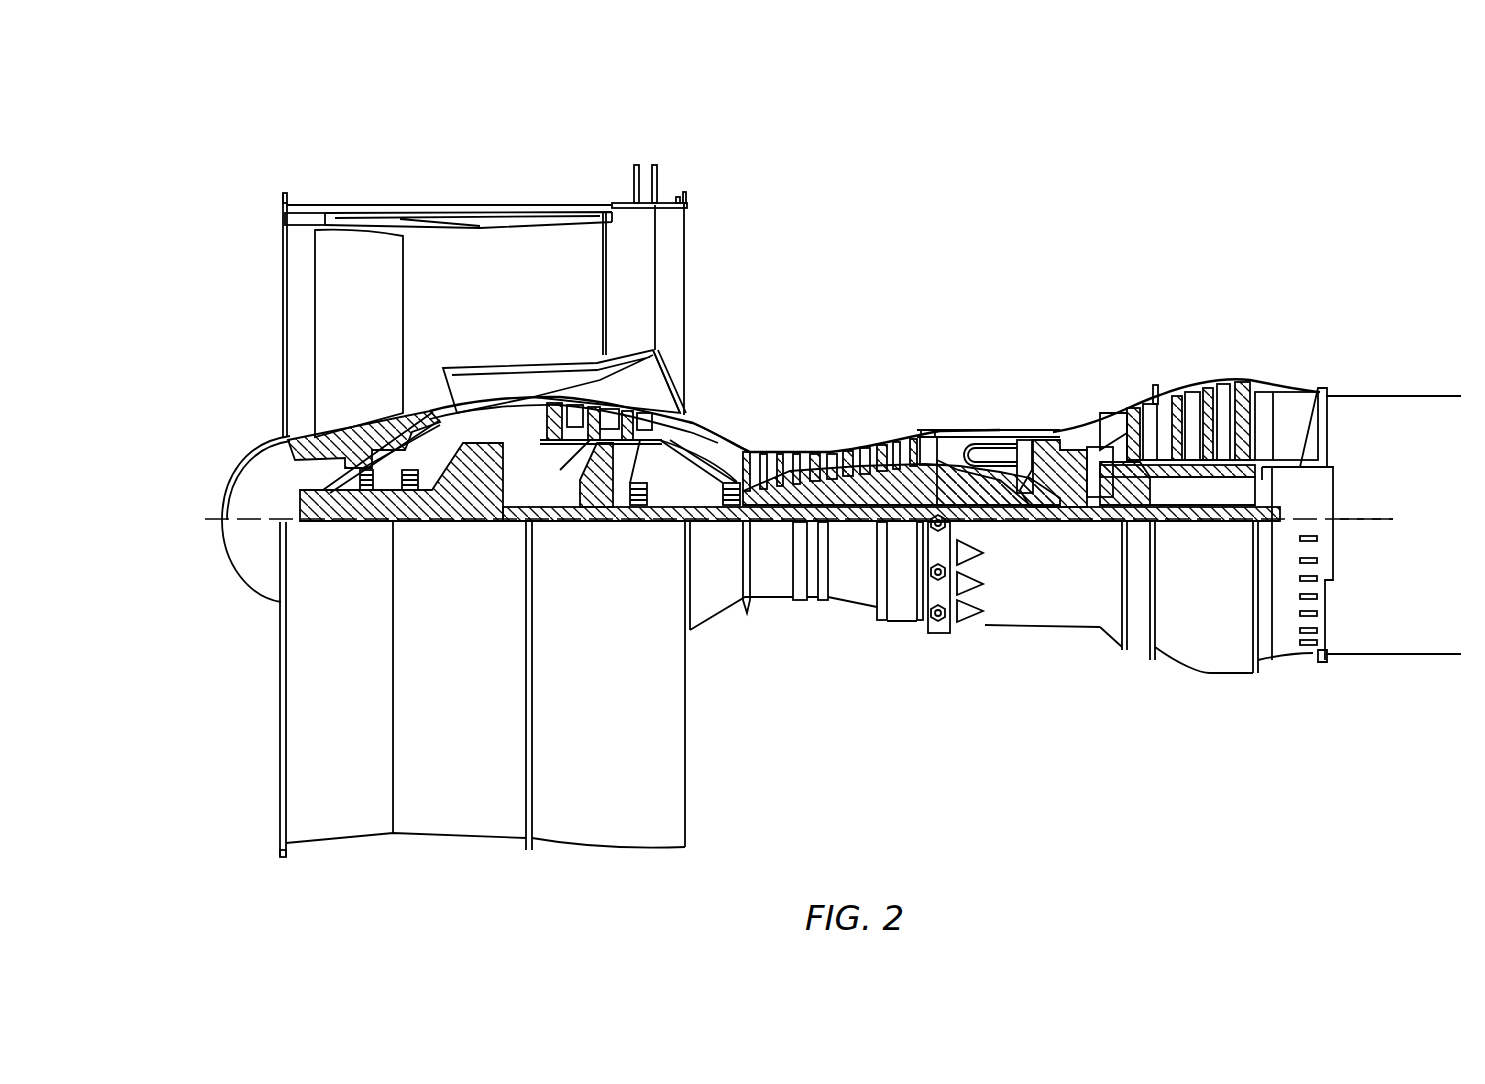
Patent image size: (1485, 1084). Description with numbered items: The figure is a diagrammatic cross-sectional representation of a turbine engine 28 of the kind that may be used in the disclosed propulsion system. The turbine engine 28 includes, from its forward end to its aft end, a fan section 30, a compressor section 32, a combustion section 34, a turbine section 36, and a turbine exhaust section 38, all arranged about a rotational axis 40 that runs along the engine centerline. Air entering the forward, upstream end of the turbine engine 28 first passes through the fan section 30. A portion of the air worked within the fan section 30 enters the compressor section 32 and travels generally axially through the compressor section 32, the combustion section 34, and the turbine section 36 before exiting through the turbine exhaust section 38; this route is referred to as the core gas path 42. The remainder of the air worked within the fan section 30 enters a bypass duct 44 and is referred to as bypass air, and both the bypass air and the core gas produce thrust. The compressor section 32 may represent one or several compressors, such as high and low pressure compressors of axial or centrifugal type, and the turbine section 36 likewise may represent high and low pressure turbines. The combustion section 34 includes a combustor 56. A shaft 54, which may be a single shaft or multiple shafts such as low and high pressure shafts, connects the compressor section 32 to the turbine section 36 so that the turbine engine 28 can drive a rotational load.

The turbine engine 28 is at (200, 128).
The fan section 30 is at (389, 178).
The compressor section 32 is at (927, 427).
The combustion section 34 is at (1043, 413).
The turbine section 36 is at (1290, 350).
The turbine exhaust section 38 is at (1392, 398).
The rotational axis 40 is at (1377, 522).
The core gas path 42 is at (705, 440).
The bypass duct 44 is at (520, 315).
The shaft 54 is at (918, 462).
The combustor 56 is at (983, 458).